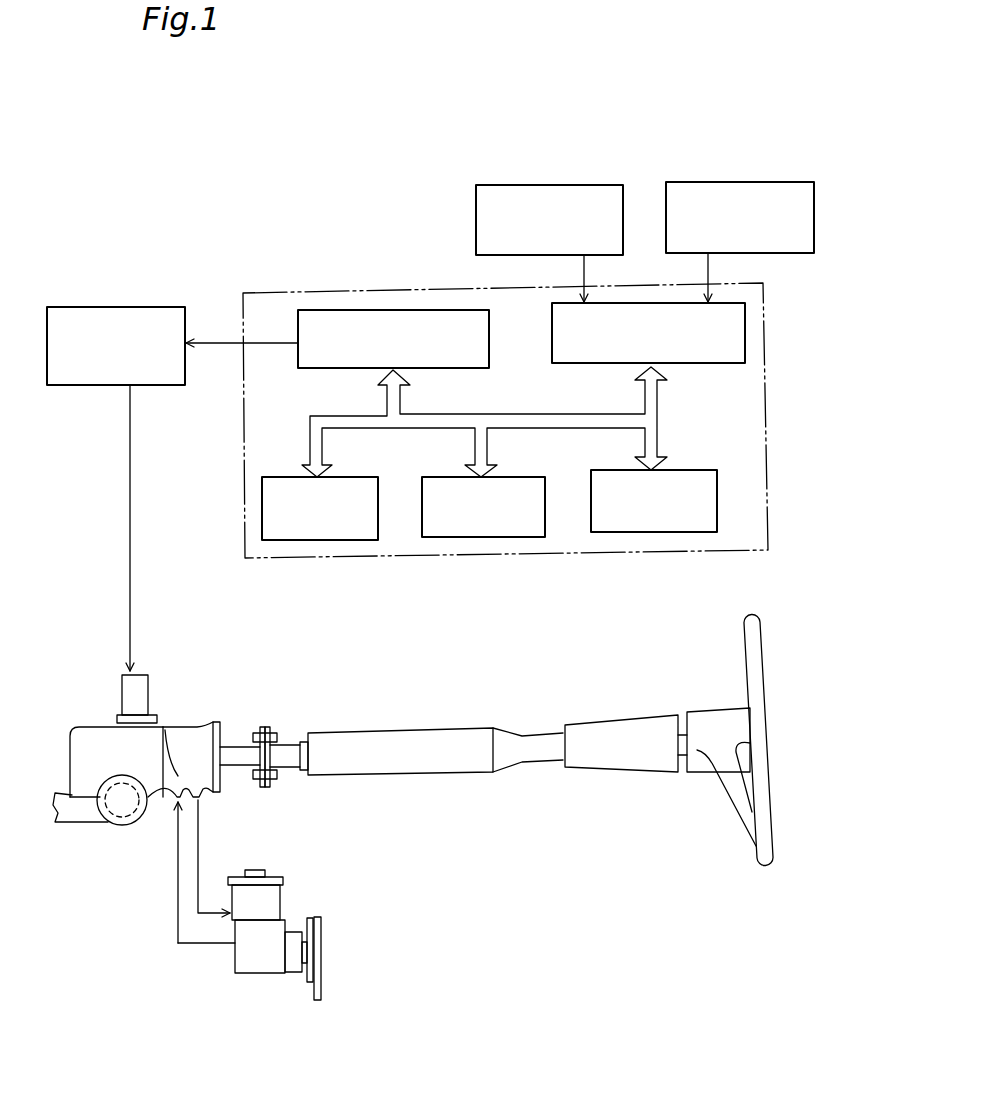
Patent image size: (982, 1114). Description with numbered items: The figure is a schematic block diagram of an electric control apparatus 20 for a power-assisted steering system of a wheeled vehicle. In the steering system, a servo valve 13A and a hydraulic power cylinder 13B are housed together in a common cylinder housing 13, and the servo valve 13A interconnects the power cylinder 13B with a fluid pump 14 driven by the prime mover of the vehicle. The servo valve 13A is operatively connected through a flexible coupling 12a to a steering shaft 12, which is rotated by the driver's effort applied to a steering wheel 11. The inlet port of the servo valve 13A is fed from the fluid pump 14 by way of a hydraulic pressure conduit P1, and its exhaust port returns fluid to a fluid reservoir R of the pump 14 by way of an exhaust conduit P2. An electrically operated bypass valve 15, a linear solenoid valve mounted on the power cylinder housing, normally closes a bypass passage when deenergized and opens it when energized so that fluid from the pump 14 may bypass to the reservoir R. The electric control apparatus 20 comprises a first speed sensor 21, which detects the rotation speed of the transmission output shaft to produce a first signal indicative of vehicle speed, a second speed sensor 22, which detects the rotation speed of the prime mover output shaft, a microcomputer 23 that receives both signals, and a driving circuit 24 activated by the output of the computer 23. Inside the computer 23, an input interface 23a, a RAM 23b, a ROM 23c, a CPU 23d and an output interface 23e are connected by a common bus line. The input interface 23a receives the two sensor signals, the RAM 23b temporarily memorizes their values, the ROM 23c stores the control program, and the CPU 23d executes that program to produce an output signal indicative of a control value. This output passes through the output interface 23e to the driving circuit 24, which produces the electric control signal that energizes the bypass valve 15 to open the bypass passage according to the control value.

The steering wheel 11 is at (758, 729).
The steering shaft 12 is at (284, 757).
The flexible coupling 12a is at (268, 730).
The cylinder housing 13 is at (95, 720).
The servo valve 13A is at (191, 726).
The hydraulic power cylinder 13B is at (72, 749).
The fluid pump 14 is at (248, 968).
The bypass valve 15 is at (148, 690).
The electric control apparatus 20 is at (352, 275).
The first speed sensor 21 is at (580, 183).
The second speed sensor 22 is at (770, 180).
The microcomputer 23 is at (768, 396).
The input interface 23a is at (695, 363).
The random access memory (RAM) 23b is at (690, 470).
The read only memory (ROM) 23c is at (527, 474).
The central processing unit (CPU) 23d is at (358, 477).
The output interface 23e is at (489, 343).
The driving circuit 24 is at (170, 305).
The hydraulic pressure conduit P1 is at (175, 886).
The exhaust conduit P2 is at (200, 846).
The fluid reservoir R is at (280, 898).